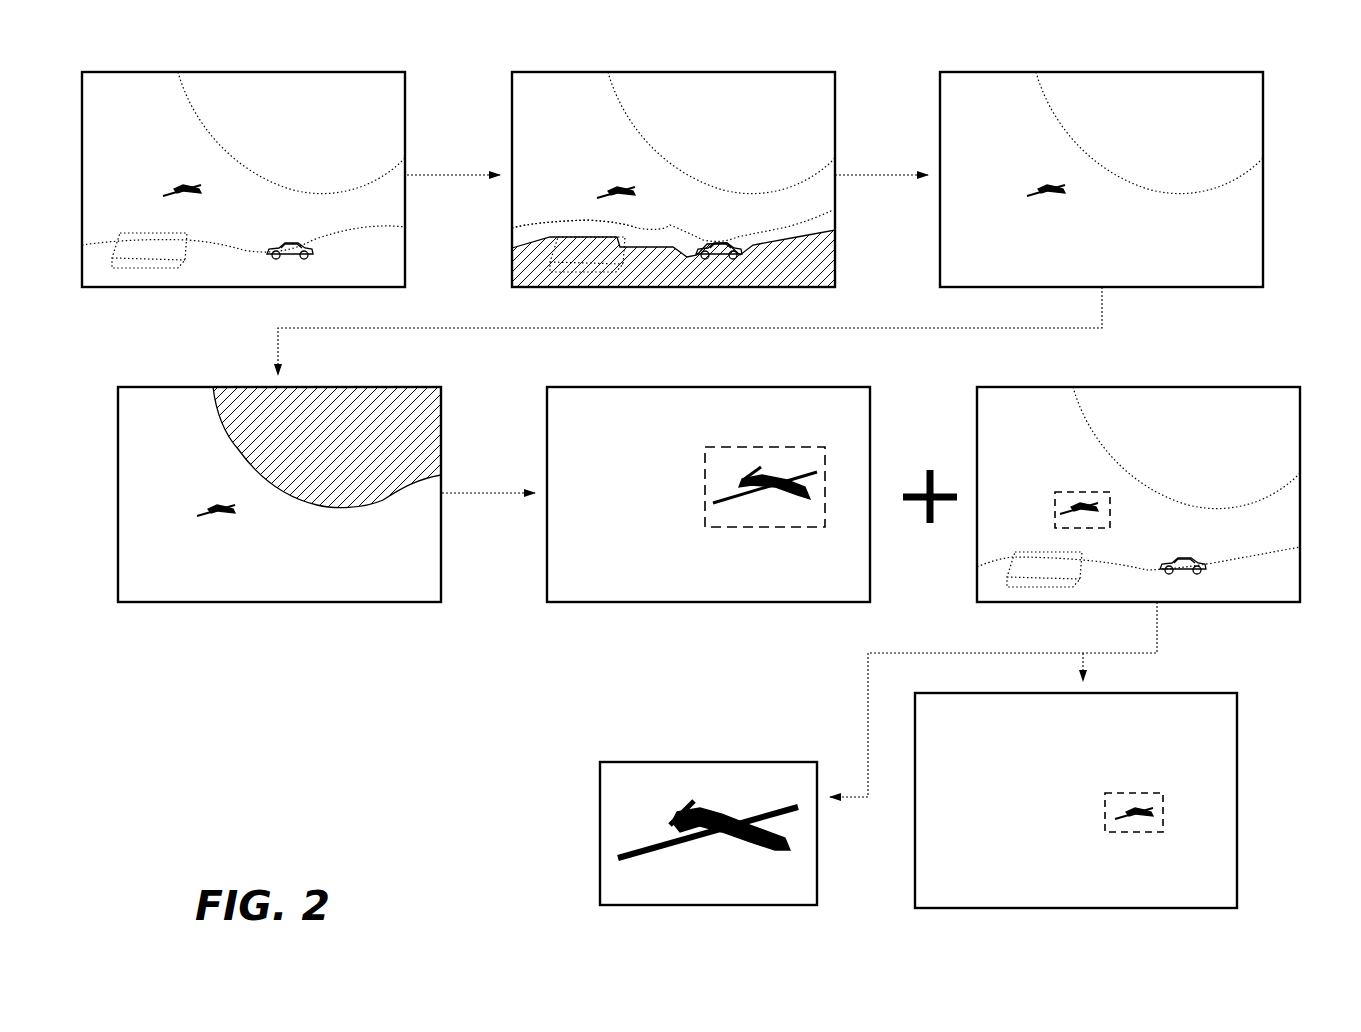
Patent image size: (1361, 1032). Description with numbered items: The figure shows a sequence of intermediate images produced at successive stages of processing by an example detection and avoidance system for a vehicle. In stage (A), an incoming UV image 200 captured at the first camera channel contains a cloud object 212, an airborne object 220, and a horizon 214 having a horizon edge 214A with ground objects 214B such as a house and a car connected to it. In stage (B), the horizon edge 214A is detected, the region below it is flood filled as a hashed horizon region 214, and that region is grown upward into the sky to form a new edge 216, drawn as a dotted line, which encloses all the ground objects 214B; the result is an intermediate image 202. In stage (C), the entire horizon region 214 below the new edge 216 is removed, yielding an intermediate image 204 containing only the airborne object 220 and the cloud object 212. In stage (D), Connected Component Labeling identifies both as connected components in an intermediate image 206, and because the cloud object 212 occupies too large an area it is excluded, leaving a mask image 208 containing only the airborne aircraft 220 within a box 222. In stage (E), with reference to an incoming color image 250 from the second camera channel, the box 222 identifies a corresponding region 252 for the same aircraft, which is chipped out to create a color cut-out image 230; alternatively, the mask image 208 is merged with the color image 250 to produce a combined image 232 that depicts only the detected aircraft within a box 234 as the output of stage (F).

The incoming UV image 200 is at (259, 178).
The intermediate image 202 is at (679, 167).
The intermediate image 204 is at (1109, 178).
The intermediate image 206 is at (265, 524).
The intermediate image 208 is at (694, 539).
The cloud object 212 is at (145, 56).
The horizon 214 is at (619, 259).
The horizon edge 214A is at (691, 379).
The ground objects 214B is at (645, 395).
The new edge 216 is at (539, 230).
The airborne object 220 is at (620, 482).
The box 222 is at (765, 462).
The color cut-out image 230 is at (600, 870).
The combined image 232 is at (1238, 793).
The box 234 is at (1107, 798).
The incoming color image 250 is at (1124, 477).
The region 252 is at (1121, 514).